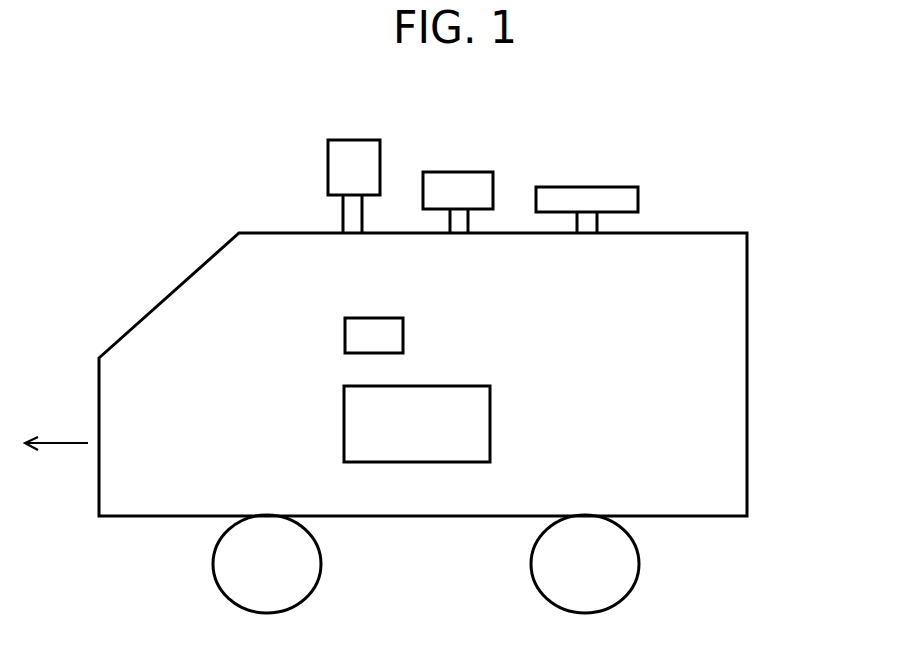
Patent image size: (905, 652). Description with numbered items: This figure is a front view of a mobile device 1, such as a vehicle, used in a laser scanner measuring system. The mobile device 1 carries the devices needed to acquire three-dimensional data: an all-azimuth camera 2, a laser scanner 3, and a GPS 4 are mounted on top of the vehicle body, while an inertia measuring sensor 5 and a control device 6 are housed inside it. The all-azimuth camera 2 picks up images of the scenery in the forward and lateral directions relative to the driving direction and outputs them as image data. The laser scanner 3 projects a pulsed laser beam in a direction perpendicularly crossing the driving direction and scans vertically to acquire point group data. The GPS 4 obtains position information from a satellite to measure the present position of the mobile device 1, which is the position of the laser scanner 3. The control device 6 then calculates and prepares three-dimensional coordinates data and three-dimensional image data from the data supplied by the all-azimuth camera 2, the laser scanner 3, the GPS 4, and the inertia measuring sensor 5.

The mobile device 1 is at (747, 265).
The all-azimuth camera 2 is at (367, 140).
The laser scanner 3 is at (482, 172).
The GPS 4 is at (638, 198).
The inertia measuring sensor 5 is at (403, 337).
The control device 6 is at (490, 406).